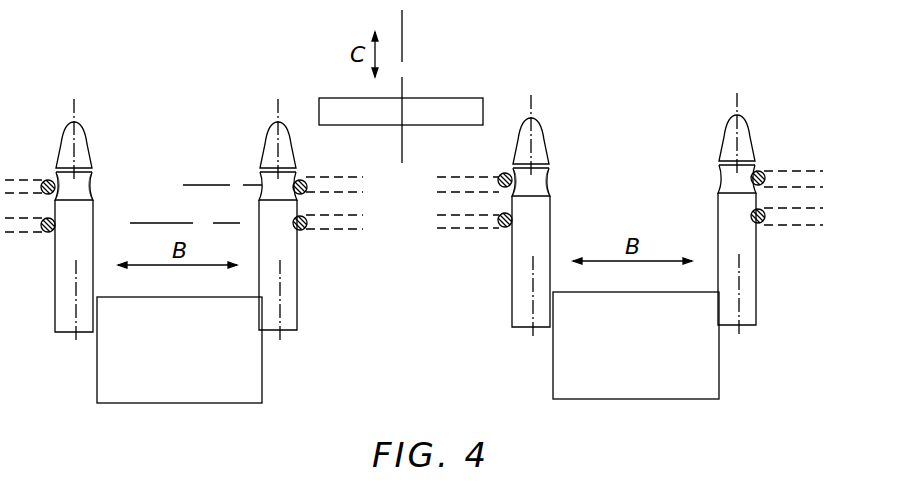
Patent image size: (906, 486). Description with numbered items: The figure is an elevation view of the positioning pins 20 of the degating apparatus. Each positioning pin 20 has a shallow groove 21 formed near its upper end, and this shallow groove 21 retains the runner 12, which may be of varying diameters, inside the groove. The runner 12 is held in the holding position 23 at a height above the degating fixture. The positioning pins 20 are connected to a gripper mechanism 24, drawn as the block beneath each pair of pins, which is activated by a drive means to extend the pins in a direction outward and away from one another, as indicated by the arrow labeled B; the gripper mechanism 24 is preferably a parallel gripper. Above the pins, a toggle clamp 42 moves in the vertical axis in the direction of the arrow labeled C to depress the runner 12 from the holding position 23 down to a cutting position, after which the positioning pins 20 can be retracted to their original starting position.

The runner 12 is at (478, 172).
The positioning pin 20 is at (55, 295).
The shallow groove 21 is at (92, 186).
The holding position 23 is at (201, 185).
The gripper mechanism 24 is at (262, 370).
The toggle clamp 42 is at (452, 98).